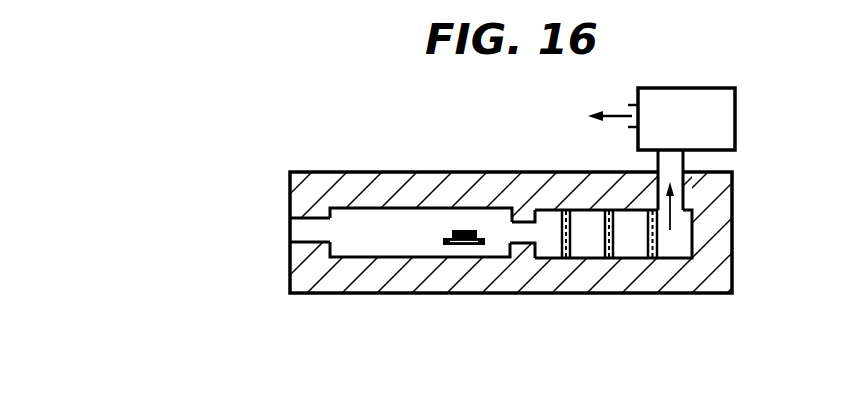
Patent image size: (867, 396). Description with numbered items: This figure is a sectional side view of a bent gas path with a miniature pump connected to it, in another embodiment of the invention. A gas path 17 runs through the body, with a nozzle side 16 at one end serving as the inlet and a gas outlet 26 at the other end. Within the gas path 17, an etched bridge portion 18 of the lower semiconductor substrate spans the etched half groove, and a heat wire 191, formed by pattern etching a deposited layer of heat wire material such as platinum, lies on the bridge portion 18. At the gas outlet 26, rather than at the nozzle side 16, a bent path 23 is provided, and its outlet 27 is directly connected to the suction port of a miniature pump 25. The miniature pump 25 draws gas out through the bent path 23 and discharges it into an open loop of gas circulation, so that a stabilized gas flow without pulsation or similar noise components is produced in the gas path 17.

The nozzle side 16 is at (303, 240).
The gas path 17 is at (382, 224).
The heat wire 191 is at (473, 227).
The bridge portion 18 is at (462, 244).
The gas outlet 26 is at (520, 242).
The bent path 23 is at (633, 242).
The miniature pump 25 is at (718, 125).
The outlet 27 is at (681, 185).